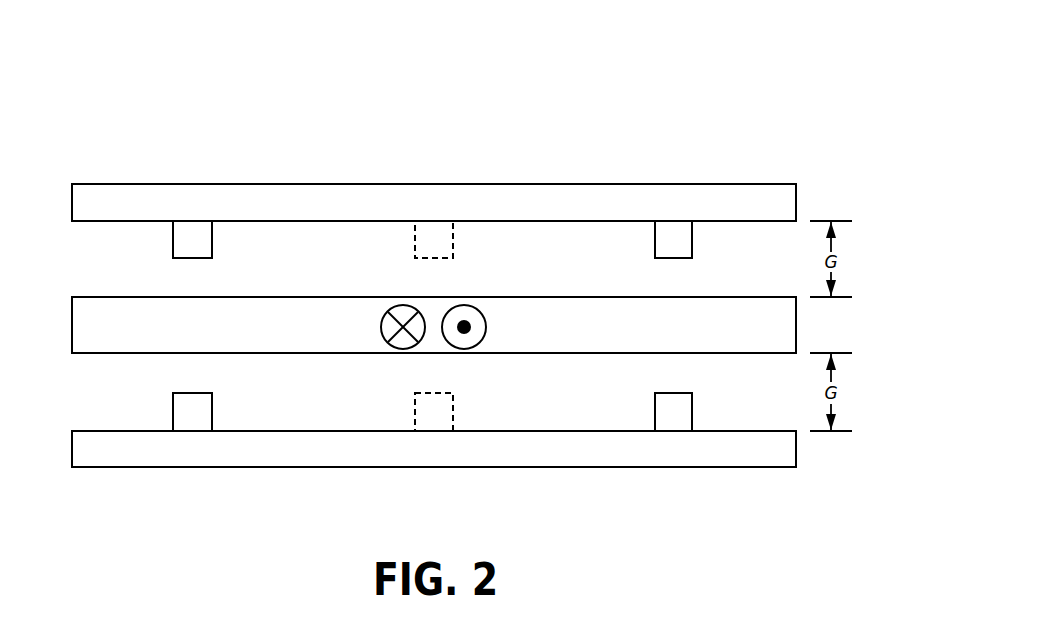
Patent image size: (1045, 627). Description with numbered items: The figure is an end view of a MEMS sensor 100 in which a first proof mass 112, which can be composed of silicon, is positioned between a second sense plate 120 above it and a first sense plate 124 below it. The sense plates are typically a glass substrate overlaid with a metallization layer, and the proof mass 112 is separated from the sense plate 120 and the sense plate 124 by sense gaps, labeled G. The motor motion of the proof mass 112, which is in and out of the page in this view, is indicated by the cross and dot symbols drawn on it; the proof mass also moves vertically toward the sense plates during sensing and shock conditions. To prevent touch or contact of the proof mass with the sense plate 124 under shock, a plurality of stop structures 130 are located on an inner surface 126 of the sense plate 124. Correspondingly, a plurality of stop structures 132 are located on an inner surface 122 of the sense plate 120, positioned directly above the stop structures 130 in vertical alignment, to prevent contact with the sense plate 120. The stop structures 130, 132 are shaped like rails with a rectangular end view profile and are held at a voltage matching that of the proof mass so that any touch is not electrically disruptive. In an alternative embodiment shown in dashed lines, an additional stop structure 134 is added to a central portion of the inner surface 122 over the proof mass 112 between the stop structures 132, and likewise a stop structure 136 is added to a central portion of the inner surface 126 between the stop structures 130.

The MEMS sensor 100 is at (570, 92).
The first proof mass 112 is at (72, 340).
The second sense plate 120 is at (72, 205).
The inner surface of sense plate 120 122 is at (142, 222).
The first sense plate 124 is at (72, 452).
The inner surface of sense plate 124 126 is at (155, 431).
The stop structures 130 is at (212, 419).
The stop structures 132 is at (212, 237).
The stop structure 134 is at (453, 238).
The stop structure 136 is at (453, 419).